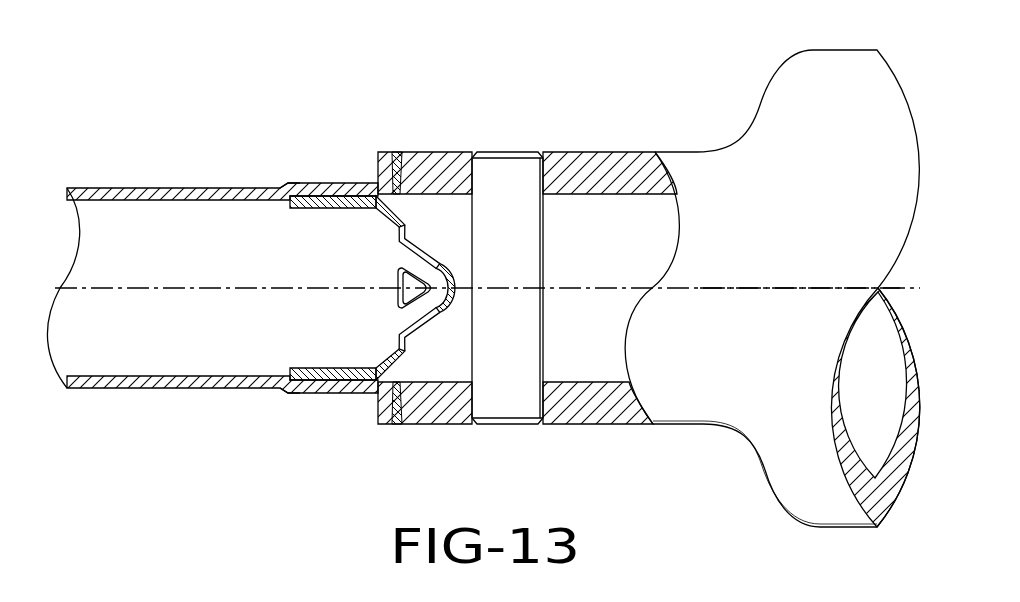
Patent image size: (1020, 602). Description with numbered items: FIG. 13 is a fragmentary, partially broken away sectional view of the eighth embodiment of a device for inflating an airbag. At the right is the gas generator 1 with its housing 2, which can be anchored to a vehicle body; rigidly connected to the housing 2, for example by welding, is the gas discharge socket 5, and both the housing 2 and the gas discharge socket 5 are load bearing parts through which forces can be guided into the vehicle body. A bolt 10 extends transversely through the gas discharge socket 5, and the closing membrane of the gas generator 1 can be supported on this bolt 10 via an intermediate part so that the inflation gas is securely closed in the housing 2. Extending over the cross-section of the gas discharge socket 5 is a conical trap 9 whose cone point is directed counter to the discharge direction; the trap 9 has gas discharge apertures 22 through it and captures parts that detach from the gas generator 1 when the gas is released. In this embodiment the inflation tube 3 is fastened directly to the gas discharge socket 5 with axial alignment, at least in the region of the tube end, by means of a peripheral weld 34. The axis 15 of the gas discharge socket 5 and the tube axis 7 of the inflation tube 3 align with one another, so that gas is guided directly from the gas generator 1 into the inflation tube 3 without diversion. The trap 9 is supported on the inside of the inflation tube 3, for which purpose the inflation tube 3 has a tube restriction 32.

The gas generator 1 is at (649, 266).
The housing 2 is at (838, 65).
The inflation tube 3 is at (118, 380).
The gas discharge socket 5 is at (582, 410).
The tube axis 7 is at (157, 288).
The trap 9 is at (403, 362).
The bolt 10 is at (508, 177).
The axis 15 is at (722, 288).
The gas discharge apertures 22 is at (420, 253).
The tube restriction 32 is at (283, 188).
The peripheral weld 34 is at (397, 152).